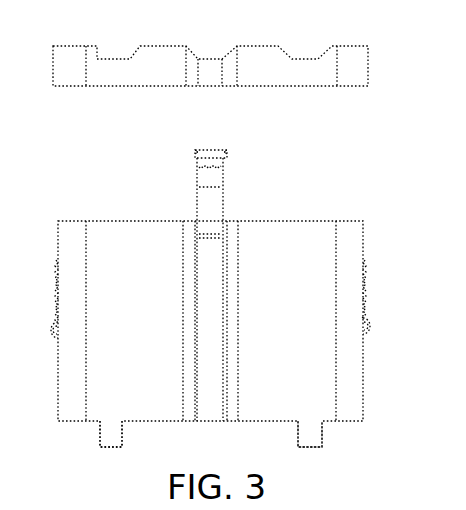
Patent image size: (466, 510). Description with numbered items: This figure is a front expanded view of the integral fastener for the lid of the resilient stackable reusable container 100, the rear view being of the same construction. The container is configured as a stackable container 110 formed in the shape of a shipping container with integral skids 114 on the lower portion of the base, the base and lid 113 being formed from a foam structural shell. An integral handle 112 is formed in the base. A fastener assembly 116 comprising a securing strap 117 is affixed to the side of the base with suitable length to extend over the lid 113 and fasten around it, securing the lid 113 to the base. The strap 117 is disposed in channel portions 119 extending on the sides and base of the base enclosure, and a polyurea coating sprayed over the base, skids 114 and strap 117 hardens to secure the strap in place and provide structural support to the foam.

The reusable container 100 is at (112, 500).
The stackable container 110 is at (342, 10).
The integral handle 112 is at (56, 320).
The lid 113 is at (141, 72).
The skids 114 is at (310, 430).
The fastener assembly 116 is at (256, 135).
The securing strap 117 is at (213, 288).
The channel portions 119 is at (215, 62).